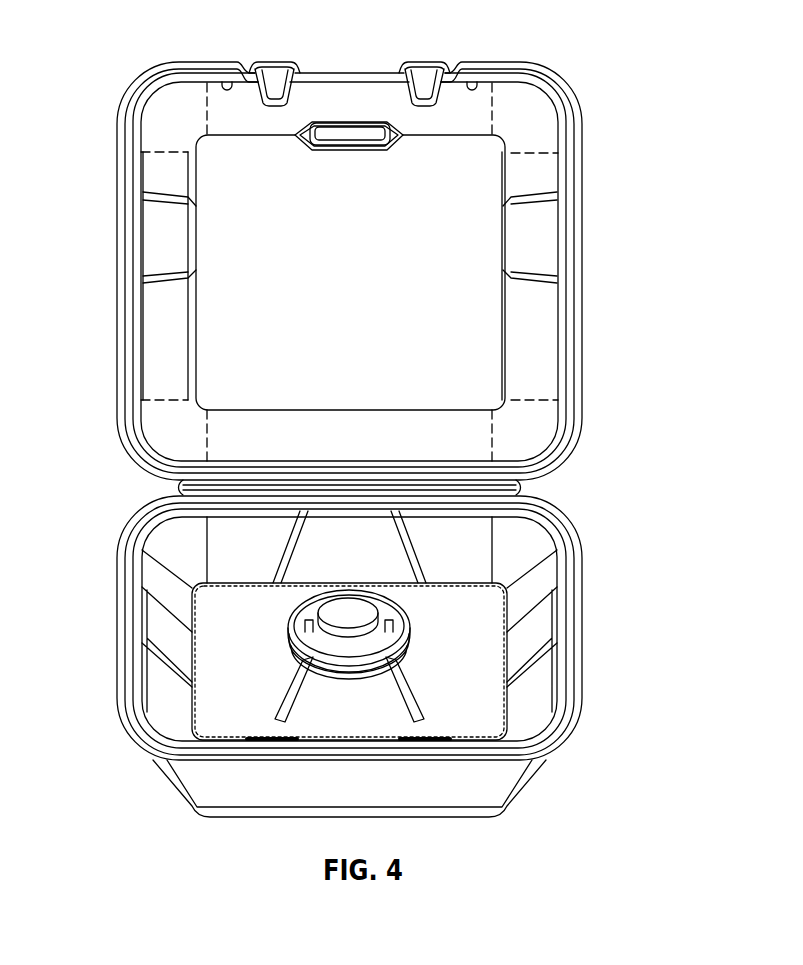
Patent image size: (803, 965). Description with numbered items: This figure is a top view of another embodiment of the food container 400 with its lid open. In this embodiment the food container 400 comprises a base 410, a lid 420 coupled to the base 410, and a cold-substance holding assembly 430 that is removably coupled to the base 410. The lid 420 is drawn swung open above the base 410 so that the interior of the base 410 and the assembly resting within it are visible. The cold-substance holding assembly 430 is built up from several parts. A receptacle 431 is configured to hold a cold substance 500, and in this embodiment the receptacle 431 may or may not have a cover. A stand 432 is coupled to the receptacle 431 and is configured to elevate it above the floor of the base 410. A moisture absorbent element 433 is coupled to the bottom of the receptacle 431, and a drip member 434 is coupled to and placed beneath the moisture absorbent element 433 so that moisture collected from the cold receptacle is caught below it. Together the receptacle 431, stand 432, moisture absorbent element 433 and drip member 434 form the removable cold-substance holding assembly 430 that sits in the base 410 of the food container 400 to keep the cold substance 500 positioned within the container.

The food container 400 is at (136, 43).
The base 410 is at (582, 575).
The lid 420 is at (582, 260).
The cold-substance holding assembly 430 is at (280, 619).
The receptacle 431 is at (405, 633).
The stand 432 is at (407, 697).
The moisture absorbent element 433 is at (355, 686).
The drip member 434 is at (337, 690).
The cold substance 500 is at (348, 607).